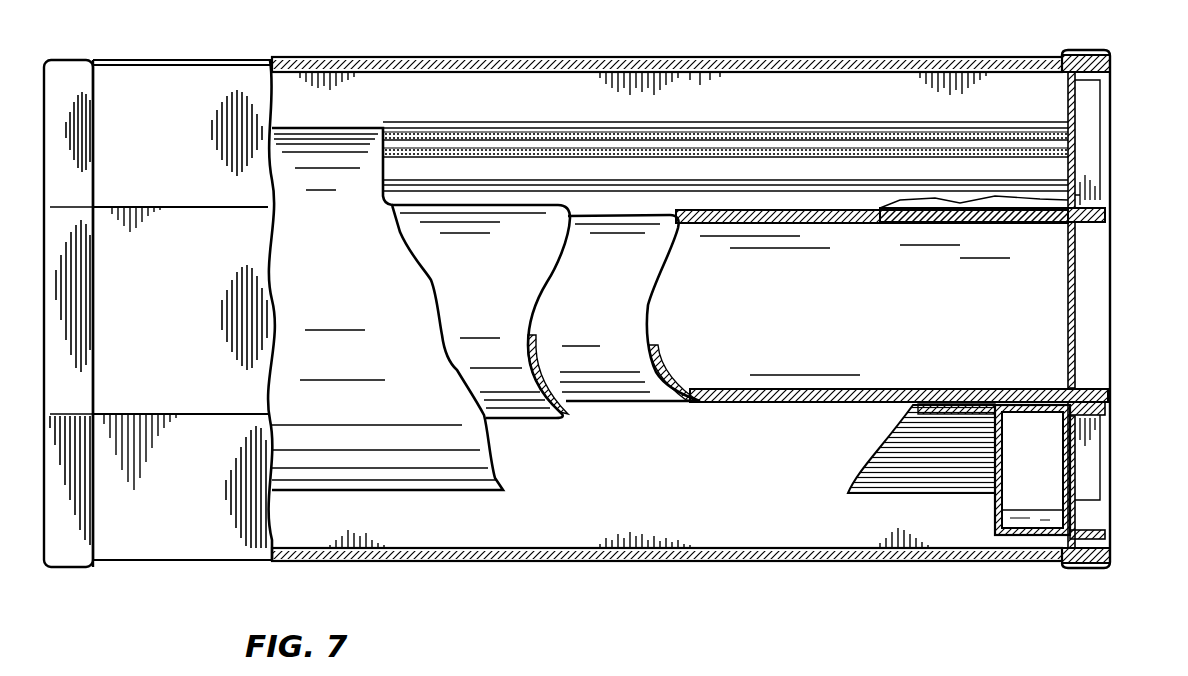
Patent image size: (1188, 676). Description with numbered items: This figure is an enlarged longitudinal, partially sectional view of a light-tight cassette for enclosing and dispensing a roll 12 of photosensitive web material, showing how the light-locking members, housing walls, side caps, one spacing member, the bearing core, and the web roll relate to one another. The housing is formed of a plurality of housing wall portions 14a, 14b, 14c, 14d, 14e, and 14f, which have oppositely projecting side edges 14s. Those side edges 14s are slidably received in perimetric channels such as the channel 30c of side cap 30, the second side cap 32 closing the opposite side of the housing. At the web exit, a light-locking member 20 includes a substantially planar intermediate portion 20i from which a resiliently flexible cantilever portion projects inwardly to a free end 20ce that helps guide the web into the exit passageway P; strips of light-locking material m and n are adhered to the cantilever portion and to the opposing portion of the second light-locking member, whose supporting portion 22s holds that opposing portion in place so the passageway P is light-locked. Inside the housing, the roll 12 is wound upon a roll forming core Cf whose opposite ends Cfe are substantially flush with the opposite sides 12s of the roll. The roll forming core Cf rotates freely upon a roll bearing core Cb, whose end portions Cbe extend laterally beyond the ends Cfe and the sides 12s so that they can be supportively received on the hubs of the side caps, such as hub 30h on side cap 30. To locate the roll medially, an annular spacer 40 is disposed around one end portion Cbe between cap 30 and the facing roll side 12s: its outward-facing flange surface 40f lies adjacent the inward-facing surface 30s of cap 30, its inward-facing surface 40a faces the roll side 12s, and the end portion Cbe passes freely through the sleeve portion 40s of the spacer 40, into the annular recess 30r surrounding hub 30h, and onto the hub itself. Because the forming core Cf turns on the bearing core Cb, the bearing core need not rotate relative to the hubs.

The side cap 32 is at (78, 56).
The housing wall portion 14a is at (733, 57).
The housing wall portion 14b is at (706, 483).
The housing wall portion 14c is at (667, 560).
The housing wall portion 14d is at (165, 528).
The housing wall portion 14e is at (163, 332).
The housing wall portion 14f is at (160, 153).
The side edges 14s is at (1112, 64).
The side cap 30 is at (1112, 92).
The perimetric channel 30c is at (1086, 52).
The hub 30h is at (1112, 214).
The annular recess 30r is at (1090, 188).
The inward-facing surface 30s is at (1068, 440).
The light-locking member 20 is at (614, 57).
The intermediate portion 20i is at (538, 86).
The free end 20ce is at (406, 130).
The supporting portion 22s is at (822, 162).
The roll 12 is at (345, 285).
The sides of the roll 12s is at (997, 474).
The annular spacer 40 is at (1005, 540).
The inward-facing surface 40a is at (996, 510).
The sleeve portion 40s is at (1028, 388).
The outward-facing flange surface 40f is at (1078, 526).
The roll forming core Cf is at (486, 285).
The roll bearing core Cb is at (600, 315).
The ends of roll forming core Cfe is at (1000, 412).
The end portions of roll bearing core Cbe is at (1112, 397).
The web exit passageway P is at (644, 146).
The strip of light-locking material n is at (737, 146).
The strip of light-locking material m is at (448, 132).